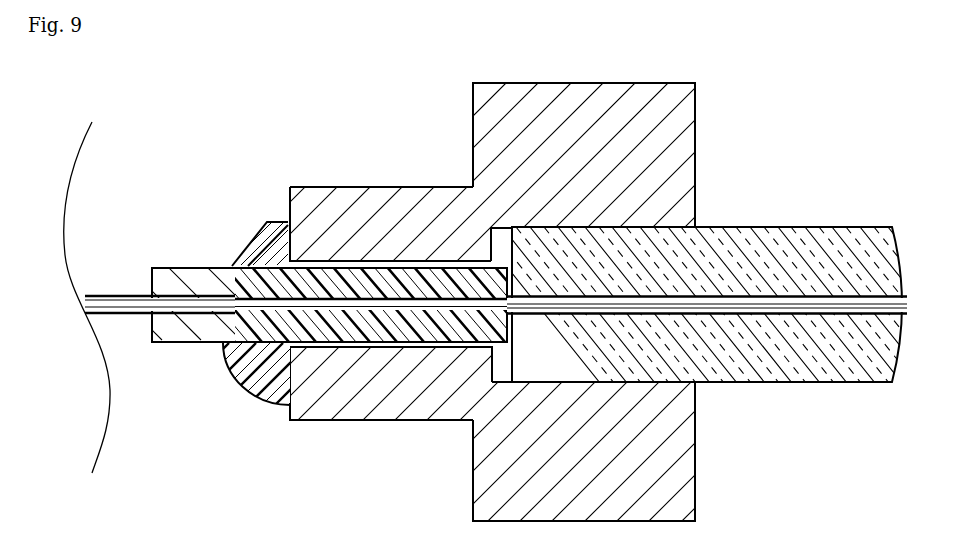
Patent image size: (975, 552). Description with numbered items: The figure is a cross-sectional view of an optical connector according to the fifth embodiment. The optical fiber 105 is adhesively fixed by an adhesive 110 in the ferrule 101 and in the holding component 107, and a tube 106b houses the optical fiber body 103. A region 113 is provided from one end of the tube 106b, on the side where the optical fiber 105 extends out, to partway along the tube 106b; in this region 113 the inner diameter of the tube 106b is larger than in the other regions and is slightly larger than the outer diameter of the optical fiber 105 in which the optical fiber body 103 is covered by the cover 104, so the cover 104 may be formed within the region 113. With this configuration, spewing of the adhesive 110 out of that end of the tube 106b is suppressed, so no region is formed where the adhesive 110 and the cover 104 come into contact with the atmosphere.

The ferrule 101 is at (790, 227).
The optical fiber body 103 is at (304, 303).
The cover 104 is at (133, 314).
The optical fiber 105 is at (115, 289).
The tube 106b is at (378, 277).
The holding component 107 is at (695, 122).
The adhesive 110 is at (490, 229).
The region 113 is at (239, 250).